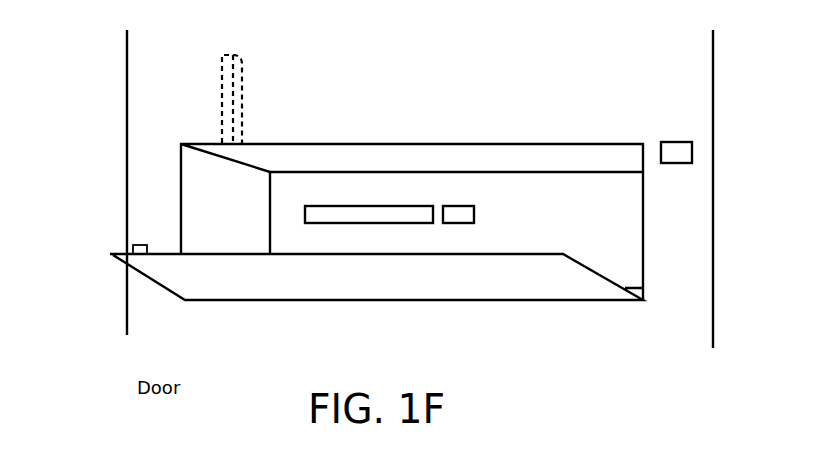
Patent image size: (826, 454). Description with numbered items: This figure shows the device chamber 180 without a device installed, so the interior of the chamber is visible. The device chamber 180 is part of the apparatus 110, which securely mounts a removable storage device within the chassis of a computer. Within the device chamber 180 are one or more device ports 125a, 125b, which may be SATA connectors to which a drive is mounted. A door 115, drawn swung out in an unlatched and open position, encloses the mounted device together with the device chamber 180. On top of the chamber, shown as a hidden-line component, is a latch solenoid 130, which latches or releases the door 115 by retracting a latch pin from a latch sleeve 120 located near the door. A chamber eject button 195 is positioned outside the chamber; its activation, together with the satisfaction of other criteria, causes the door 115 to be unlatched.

The apparatus 110 is at (106, 82).
The door 115 is at (176, 280).
The latch sleeve 120 is at (165, 254).
The device port 125a is at (369, 215).
The device port 125b is at (465, 215).
The latch solenoid 130 is at (242, 103).
The device chamber 180 is at (547, 217).
The chamber eject button 195 is at (687, 142).